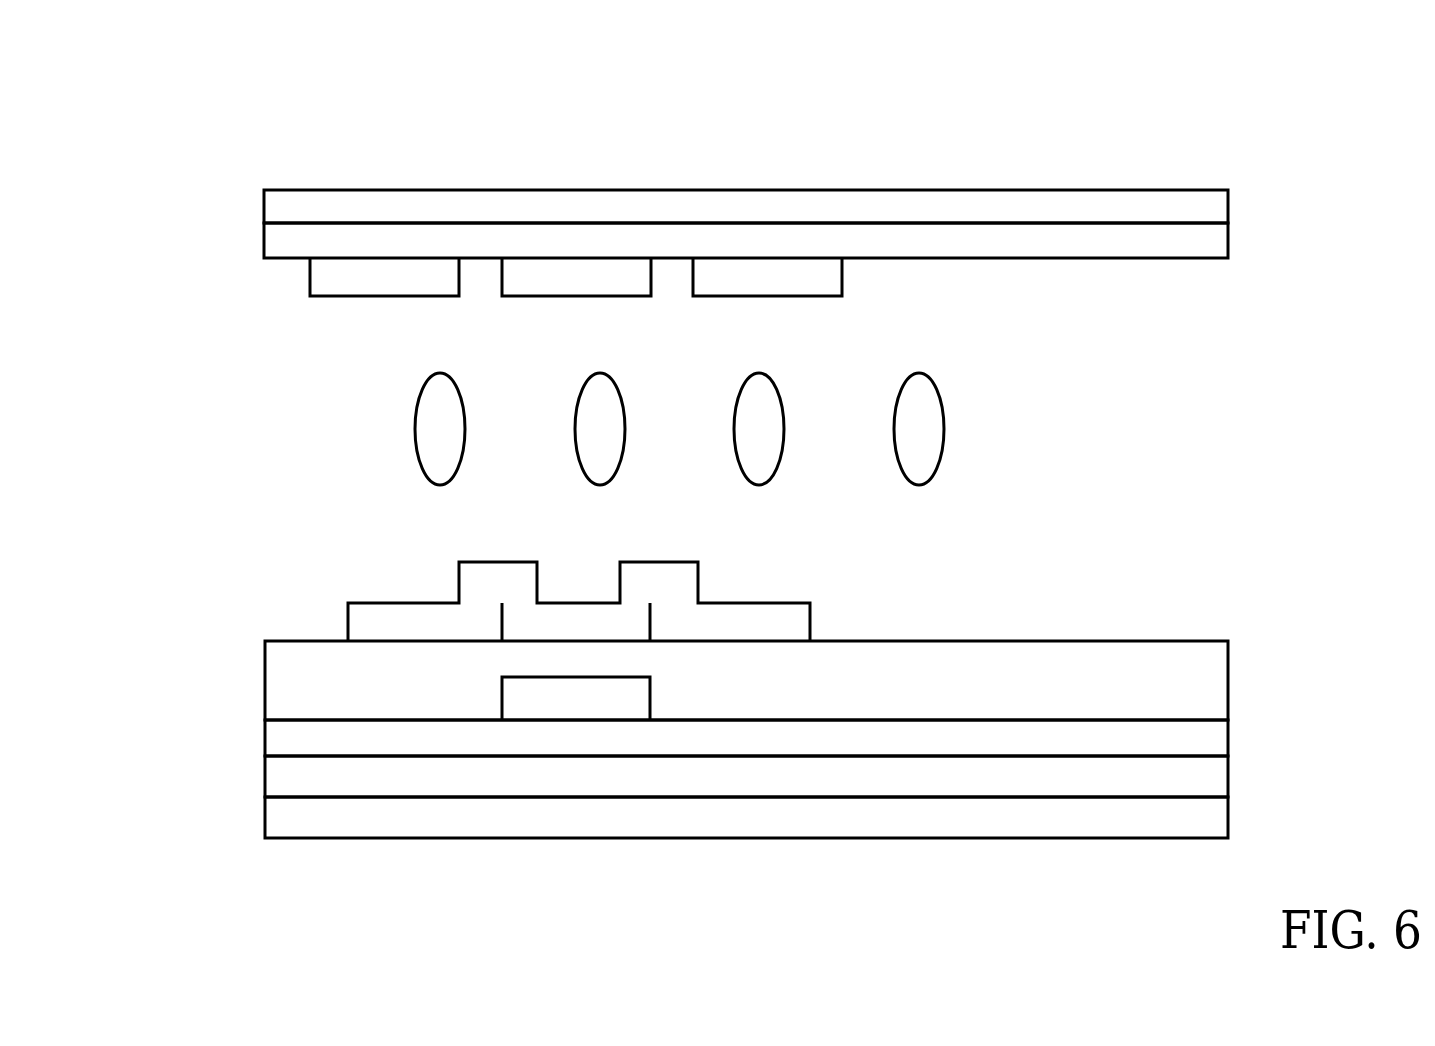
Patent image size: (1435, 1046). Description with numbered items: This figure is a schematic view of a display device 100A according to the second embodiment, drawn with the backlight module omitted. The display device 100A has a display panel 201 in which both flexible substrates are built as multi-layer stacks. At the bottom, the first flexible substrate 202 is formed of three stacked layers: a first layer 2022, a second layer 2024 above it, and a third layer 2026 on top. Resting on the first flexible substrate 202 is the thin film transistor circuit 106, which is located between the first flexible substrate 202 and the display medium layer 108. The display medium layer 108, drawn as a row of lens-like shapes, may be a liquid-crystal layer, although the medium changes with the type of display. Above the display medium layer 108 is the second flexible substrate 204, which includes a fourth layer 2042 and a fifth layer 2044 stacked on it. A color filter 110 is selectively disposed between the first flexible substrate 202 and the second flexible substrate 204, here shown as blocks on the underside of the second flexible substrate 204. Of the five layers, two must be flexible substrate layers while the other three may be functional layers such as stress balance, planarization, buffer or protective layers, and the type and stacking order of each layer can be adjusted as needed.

The display device 100A is at (126, 87).
The display panel 201 is at (175, 165).
The second flexible substrate 204 is at (150, 190).
The fifth layer 2044 is at (308, 205).
The fourth layer 2042 is at (308, 242).
The color filter 110 is at (290, 277).
The display medium layer 108 is at (350, 428).
The thin film transistor circuit 106 is at (264, 562).
The first flexible substrate 202 is at (153, 723).
The third layer 2026 is at (308, 737).
The second layer 2024 is at (308, 778).
The first layer 2022 is at (308, 818).